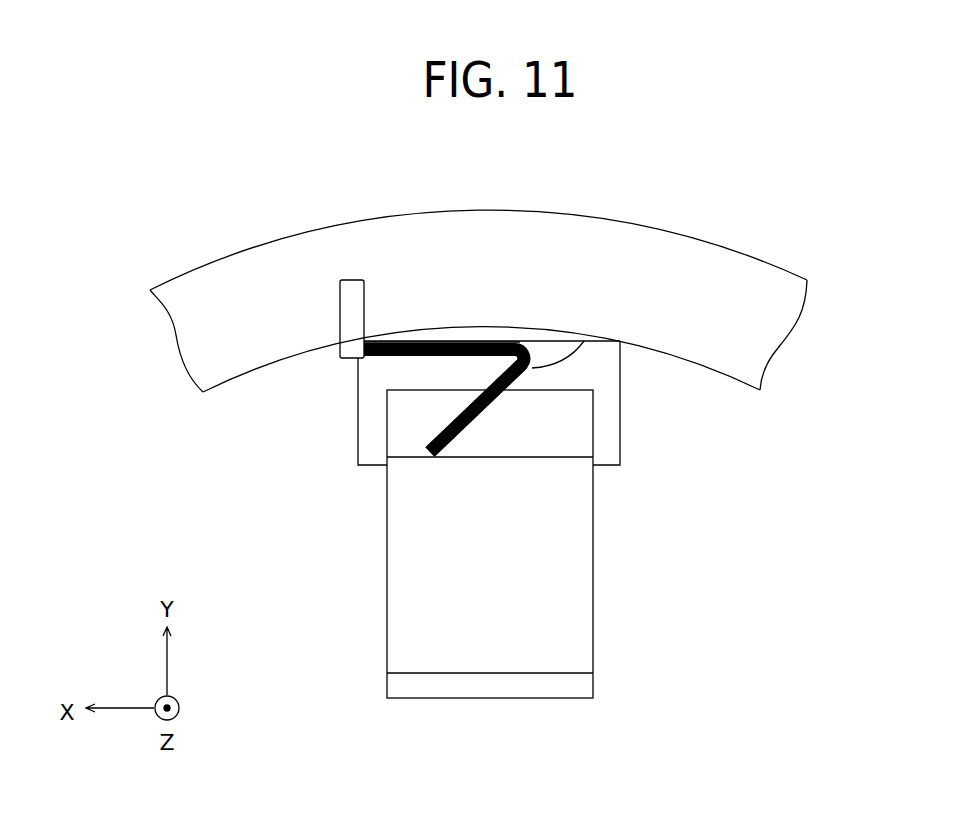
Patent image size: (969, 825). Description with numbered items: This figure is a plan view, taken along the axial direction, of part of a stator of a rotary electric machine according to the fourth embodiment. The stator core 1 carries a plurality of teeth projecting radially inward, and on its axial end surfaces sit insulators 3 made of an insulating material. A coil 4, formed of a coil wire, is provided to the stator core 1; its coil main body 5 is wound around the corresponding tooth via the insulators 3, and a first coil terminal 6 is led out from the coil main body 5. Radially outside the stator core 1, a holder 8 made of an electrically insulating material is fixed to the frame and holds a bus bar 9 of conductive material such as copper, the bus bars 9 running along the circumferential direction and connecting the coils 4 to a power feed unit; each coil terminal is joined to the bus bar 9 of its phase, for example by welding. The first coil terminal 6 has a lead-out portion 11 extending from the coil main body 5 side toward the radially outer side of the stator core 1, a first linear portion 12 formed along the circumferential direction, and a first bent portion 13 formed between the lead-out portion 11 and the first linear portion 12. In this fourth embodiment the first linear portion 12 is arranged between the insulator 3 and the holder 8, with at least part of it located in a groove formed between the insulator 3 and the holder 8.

The stator core 1 is at (628, 437).
The insulator 3 is at (385, 434).
The coil 4 is at (387, 573).
The coil main body 5 is at (408, 640).
The first coil terminal 6 is at (485, 340).
The holder 8 is at (388, 252).
The bus bar 9 is at (353, 278).
The lead-out portion 11 is at (433, 437).
The first linear portion 12 is at (442, 340).
The first bent portion 13 is at (570, 337).